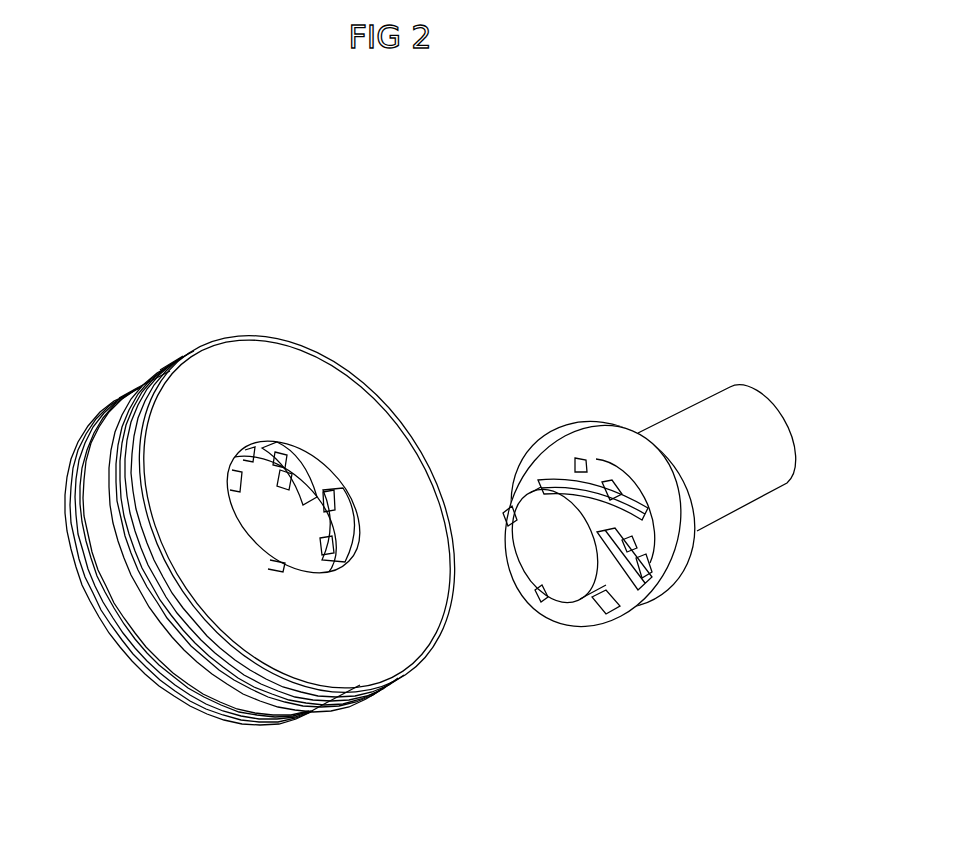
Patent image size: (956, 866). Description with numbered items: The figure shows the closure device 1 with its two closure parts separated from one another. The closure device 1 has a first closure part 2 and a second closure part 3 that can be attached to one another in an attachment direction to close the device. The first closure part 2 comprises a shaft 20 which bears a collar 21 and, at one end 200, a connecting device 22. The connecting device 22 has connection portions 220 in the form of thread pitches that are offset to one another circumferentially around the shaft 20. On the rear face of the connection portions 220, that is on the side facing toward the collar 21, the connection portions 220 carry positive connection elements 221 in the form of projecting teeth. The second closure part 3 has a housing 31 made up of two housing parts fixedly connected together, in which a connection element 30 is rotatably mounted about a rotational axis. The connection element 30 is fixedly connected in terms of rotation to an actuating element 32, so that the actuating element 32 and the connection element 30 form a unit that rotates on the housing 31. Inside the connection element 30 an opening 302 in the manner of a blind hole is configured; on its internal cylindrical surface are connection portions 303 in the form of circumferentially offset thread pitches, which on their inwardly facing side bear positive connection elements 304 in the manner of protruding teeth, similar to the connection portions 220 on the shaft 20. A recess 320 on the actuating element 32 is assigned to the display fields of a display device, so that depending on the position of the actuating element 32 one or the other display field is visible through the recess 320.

The closure device 1 is at (383, 296).
The first closure part 2 is at (668, 624).
The shaft 20 is at (716, 410).
The collar 21 is at (673, 581).
The connecting device 22 is at (572, 626).
The end 200 is at (558, 588).
The connection portions 220 is at (640, 588).
The positive connection elements 221 is at (612, 482).
The second closure part 3 is at (307, 732).
The connection element 30 is at (393, 657).
The housing 31 is at (278, 702).
The actuating element 32 is at (163, 700).
The recess 320 is at (232, 727).
The opening 302 is at (323, 470).
The connection portions 303 is at (314, 485).
The positive connection elements 304 is at (334, 500).